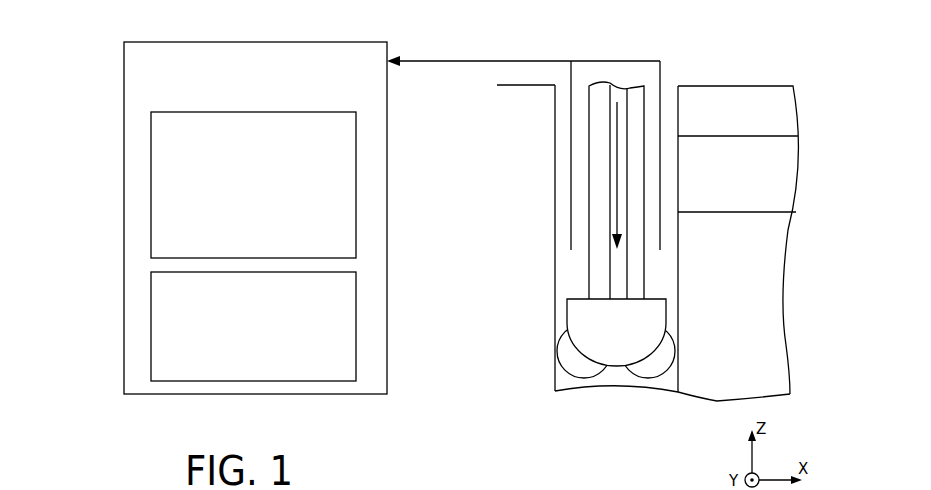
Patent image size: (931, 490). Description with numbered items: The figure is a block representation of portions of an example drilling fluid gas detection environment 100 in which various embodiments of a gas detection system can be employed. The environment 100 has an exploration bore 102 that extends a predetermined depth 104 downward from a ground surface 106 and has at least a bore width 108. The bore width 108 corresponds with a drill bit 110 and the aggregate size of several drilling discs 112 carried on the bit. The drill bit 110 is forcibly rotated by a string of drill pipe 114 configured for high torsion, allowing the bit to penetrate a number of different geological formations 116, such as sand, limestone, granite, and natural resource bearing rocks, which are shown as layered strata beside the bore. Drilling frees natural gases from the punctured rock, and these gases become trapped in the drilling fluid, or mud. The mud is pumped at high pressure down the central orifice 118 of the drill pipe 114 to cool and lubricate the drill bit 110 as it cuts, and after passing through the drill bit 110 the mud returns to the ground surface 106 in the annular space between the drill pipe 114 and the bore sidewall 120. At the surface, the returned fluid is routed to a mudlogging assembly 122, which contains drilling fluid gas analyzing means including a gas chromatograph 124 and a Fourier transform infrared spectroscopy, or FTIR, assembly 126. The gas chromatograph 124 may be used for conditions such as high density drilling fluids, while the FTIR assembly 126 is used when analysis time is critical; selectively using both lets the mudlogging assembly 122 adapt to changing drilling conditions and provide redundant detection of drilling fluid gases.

The drilling fluid gas detection environment 100 is at (131, 30).
The exploration bore 102 is at (672, 74).
The predetermined depth 104 is at (497, 93).
The ground surface 106 is at (546, 86).
The bore width 108 is at (678, 402).
The drill bit 110 is at (632, 320).
The drilling discs 112 is at (572, 362).
The drill pipe 114 is at (589, 281).
The geological formations 116 is at (753, 118).
The central orifice 118 is at (608, 267).
The bore sidewall 120 is at (679, 253).
The mudlogging assembly 122 is at (160, 63).
The gas chromatograph 124 is at (188, 134).
The FTIR assembly 126 is at (190, 293).